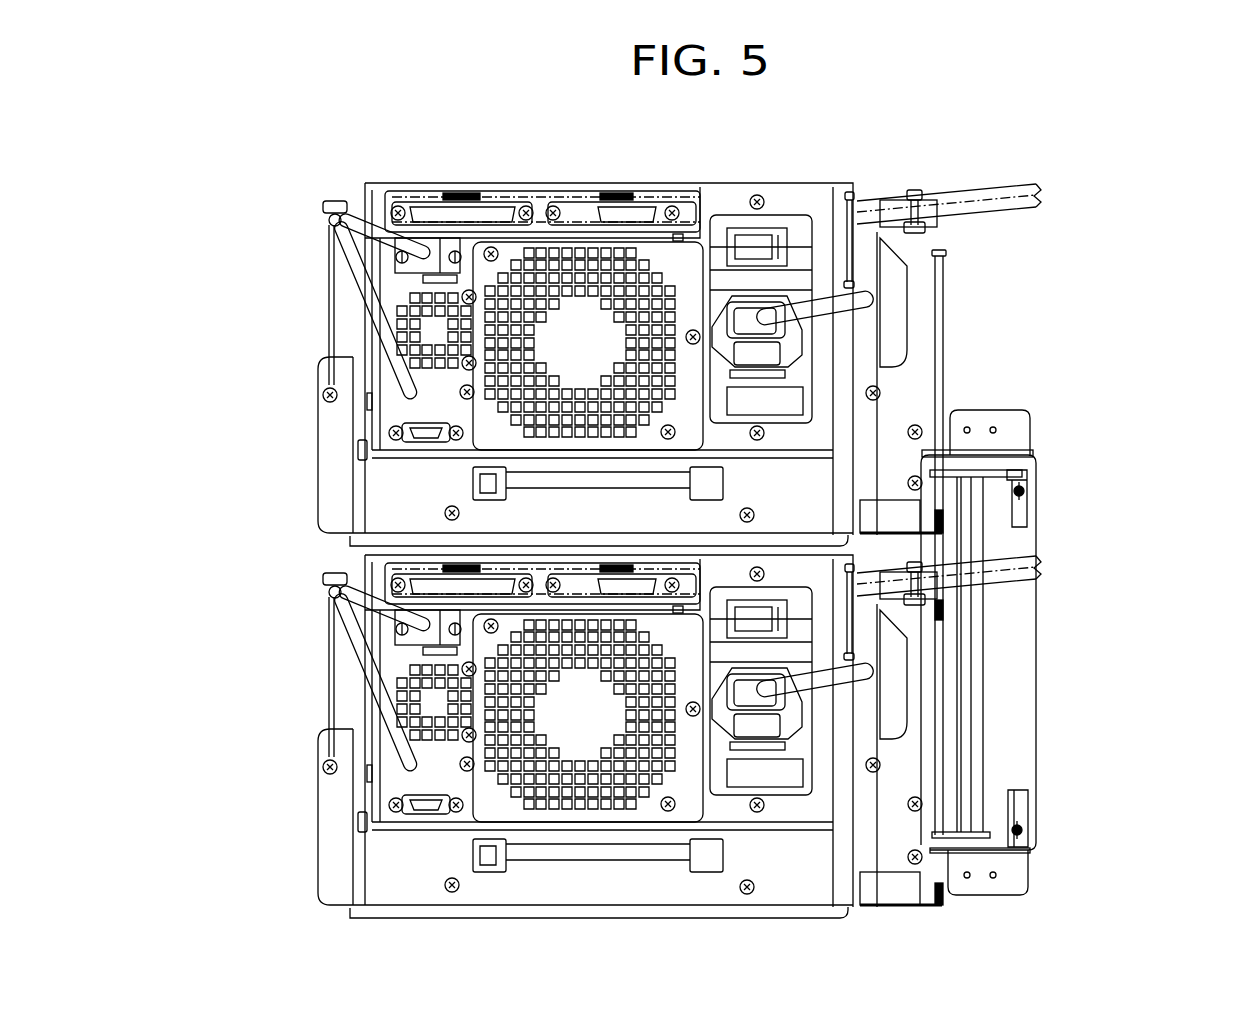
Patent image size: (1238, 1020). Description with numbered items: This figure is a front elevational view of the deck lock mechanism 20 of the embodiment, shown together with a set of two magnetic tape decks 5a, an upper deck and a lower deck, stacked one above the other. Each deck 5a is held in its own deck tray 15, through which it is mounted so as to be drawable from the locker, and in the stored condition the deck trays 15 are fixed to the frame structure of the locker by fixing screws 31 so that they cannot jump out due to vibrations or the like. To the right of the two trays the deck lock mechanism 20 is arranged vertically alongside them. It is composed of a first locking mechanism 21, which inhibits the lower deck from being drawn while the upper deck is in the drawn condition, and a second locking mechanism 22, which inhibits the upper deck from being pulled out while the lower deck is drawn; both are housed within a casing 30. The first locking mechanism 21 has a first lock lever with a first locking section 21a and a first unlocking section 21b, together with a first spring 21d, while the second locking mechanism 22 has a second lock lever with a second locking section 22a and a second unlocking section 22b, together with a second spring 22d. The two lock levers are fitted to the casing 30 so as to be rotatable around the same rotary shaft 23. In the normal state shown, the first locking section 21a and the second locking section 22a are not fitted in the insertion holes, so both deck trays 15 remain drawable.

The magnetic tape deck 5a is at (432, 330).
The deck tray 15 is at (320, 443).
The deck lock mechanism 20 is at (1003, 652).
The first locking mechanism 21 is at (992, 553).
The first locking section 21a is at (980, 470).
The first unlocking section 21b is at (982, 855).
The first spring 21d is at (1024, 833).
The second locking mechanism 22 is at (970, 816).
The second locking section 22a is at (986, 830).
The second unlocking section 22b is at (988, 467).
The second spring 22d is at (1029, 488).
The rotary shaft 23 is at (978, 612).
The casing 30 is at (1038, 663).
The fixing screw 31 is at (322, 390).